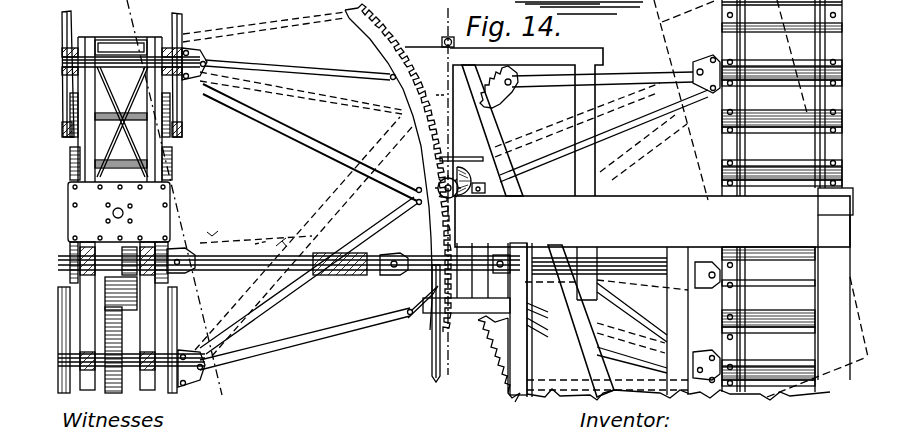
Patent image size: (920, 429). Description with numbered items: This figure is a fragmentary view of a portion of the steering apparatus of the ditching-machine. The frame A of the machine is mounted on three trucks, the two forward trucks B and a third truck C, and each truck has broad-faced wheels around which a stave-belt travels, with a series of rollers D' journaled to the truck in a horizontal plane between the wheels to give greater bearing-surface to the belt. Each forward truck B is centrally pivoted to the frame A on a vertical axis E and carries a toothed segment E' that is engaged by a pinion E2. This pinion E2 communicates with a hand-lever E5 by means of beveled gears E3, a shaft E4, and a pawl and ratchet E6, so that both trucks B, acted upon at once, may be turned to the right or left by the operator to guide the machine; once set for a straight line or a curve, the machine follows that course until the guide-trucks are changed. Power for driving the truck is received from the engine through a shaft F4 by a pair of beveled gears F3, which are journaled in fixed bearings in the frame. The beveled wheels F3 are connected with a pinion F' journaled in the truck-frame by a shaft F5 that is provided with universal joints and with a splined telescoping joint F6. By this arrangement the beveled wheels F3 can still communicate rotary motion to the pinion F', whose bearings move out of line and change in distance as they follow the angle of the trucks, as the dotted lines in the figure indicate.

The frame A is at (638, 242).
The forward truck B is at (134, 96).
The truck C is at (562, 12).
The rollers D' is at (236, 197).
The vertical axis E is at (259, 168).
The toothed segment E' is at (375, 237).
The pinion E2 is at (472, 198).
The beveled gears E3 is at (436, 153).
The shaft E4 is at (437, 102).
The hand-lever E5 is at (444, 39).
The pawl and ratchet E6 is at (449, 55).
The pinion F' is at (276, 277).
The beveled gears F3 is at (430, 322).
The shaft F4 is at (432, 366).
The shaft F5 is at (261, 238).
The splined telescoping joint F6 is at (360, 276).